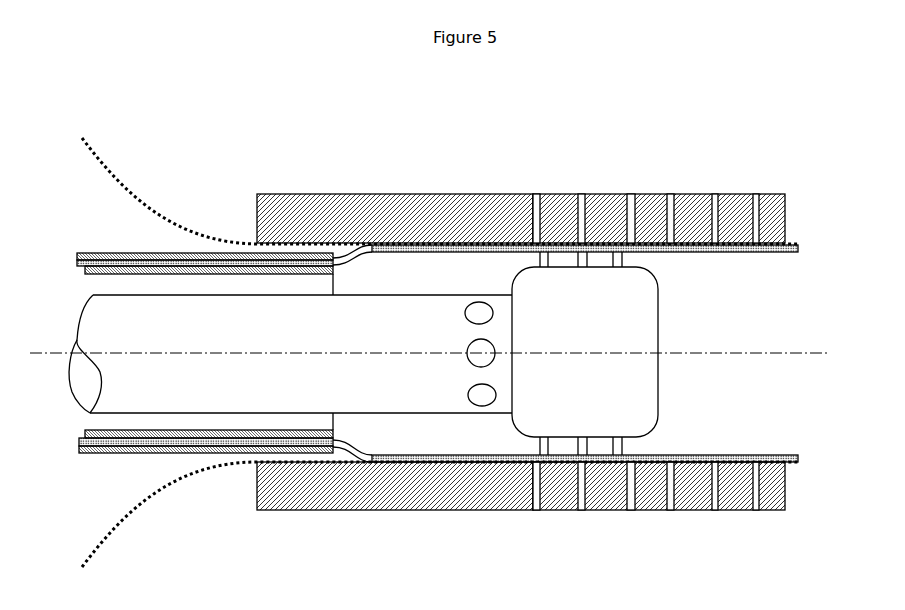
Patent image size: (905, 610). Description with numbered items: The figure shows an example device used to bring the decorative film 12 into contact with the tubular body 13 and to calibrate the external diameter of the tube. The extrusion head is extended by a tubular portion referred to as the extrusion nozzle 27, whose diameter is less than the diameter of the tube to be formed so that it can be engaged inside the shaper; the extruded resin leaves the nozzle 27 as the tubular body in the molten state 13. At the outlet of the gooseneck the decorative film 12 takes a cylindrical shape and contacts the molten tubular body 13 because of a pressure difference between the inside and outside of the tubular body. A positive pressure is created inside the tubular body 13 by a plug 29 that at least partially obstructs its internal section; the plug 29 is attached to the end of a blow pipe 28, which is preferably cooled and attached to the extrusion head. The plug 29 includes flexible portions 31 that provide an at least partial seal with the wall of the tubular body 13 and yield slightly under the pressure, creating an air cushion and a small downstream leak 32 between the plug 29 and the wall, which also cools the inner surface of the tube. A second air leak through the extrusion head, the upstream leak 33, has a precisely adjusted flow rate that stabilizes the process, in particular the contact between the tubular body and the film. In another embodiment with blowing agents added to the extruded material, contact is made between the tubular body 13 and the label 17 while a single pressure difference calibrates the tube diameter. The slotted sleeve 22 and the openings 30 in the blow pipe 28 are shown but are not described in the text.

The decorative film 12 is at (128, 200).
The tubular body in the molten state 13 is at (350, 252).
The label 17 is at (313, 243).
The slotted sleeve 22 is at (513, 207).
The extrusion nozzle 27 is at (85, 252).
The blow pipe 28 is at (305, 382).
The plug 29 is at (637, 295).
The holes 30 is at (484, 390).
The flexible portions 31 is at (615, 440).
The downstream leak 32 is at (653, 443).
The upstream leak 33 is at (185, 420).